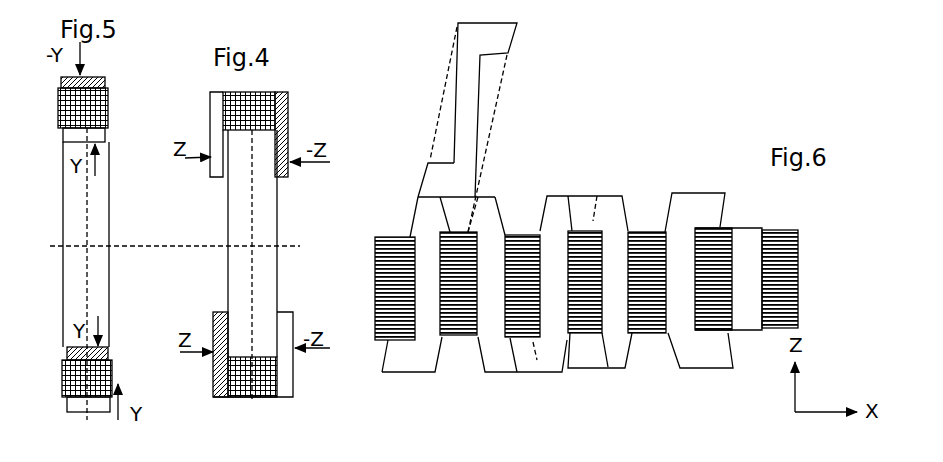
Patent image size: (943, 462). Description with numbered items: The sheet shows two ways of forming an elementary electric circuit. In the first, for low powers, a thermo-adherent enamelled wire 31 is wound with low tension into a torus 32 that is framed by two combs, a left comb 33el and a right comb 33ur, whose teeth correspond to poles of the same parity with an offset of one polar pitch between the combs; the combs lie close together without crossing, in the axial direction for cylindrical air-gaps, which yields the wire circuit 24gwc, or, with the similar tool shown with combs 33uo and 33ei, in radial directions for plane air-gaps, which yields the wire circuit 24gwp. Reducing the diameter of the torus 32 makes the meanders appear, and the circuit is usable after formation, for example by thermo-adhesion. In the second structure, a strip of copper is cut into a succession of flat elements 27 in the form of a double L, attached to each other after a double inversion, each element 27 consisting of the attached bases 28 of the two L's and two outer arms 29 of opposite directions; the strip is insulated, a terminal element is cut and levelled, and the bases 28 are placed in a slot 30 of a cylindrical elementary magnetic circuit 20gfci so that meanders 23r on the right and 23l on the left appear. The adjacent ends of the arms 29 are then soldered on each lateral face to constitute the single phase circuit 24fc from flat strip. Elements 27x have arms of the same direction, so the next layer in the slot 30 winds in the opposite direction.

In FIG. 5, the comb 33uo is at (105, 82).
In FIG. 5, the thermo-adherent enamelled wire 31 is at (108, 116).
In FIG. 4, the thermo-adherent enamelled wire 31 is at (232, 375).
In FIG. 5, the comb 33ei is at (93, 136).
In FIG. 5, the electric circuit made of wire for plane air-gaps 24gwp is at (98, 268).
In FIG. 5, the torus 32 is at (112, 377).
In FIG. 4, the torus 32 is at (253, 102).
In FIG. 4, the left comb 33el is at (221, 108).
In FIG. 4, the right comb 33ur is at (288, 115).
In FIG. 4, the electric circuit made of wire for cylindrical air-gaps 24gwc is at (243, 222).
In FIG. 6, the attached bases 28 is at (463, 112).
In FIG. 6, the outer arms 29 is at (443, 188).
In FIG. 6, the flat element in form of a double L 27 is at (455, 150).
In FIG. 6, the left-side meander 23l is at (492, 353).
In FIG. 6, the right-side meander 23r is at (557, 198).
In FIG. 6, the element with arms of the same direction 27x is at (688, 195).
In FIG. 6, the slot 30 is at (757, 290).
In FIG. 6, the cylindrical elementary magnetic circuit 20gfci is at (647, 335).
In FIG. 6, the single phase elementary electric circuit from flat strip for cylindrical air-gap 24fc is at (742, 212).